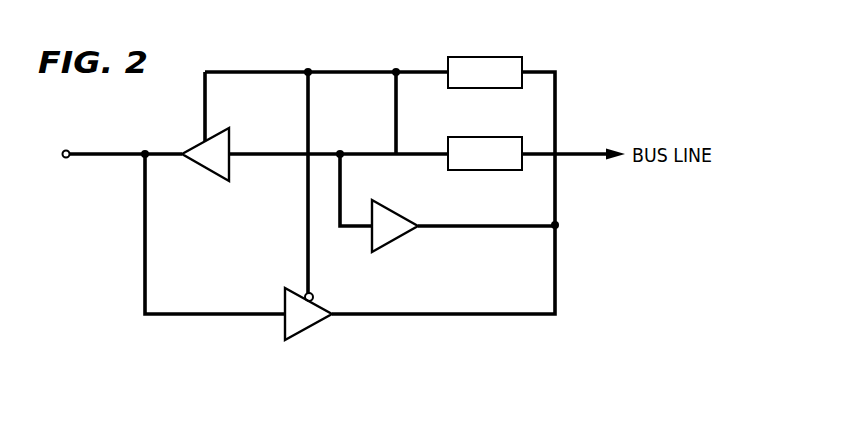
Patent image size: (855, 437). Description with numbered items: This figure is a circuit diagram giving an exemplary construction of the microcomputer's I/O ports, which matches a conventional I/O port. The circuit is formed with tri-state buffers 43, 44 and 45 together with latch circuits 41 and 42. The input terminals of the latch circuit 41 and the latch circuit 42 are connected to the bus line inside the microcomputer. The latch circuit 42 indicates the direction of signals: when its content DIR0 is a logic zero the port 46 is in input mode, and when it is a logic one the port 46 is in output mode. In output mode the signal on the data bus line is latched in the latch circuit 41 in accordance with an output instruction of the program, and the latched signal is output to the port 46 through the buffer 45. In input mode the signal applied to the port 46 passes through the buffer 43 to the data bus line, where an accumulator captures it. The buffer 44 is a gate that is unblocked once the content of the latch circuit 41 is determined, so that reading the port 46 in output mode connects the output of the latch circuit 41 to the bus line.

The latch circuit 41 is at (482, 170).
The latch circuit 42 is at (497, 57).
The tri-state buffer 43 is at (310, 333).
The tri-state buffer 44 is at (397, 240).
The tri-state buffer 45 is at (198, 165).
The port 46 is at (53, 158).